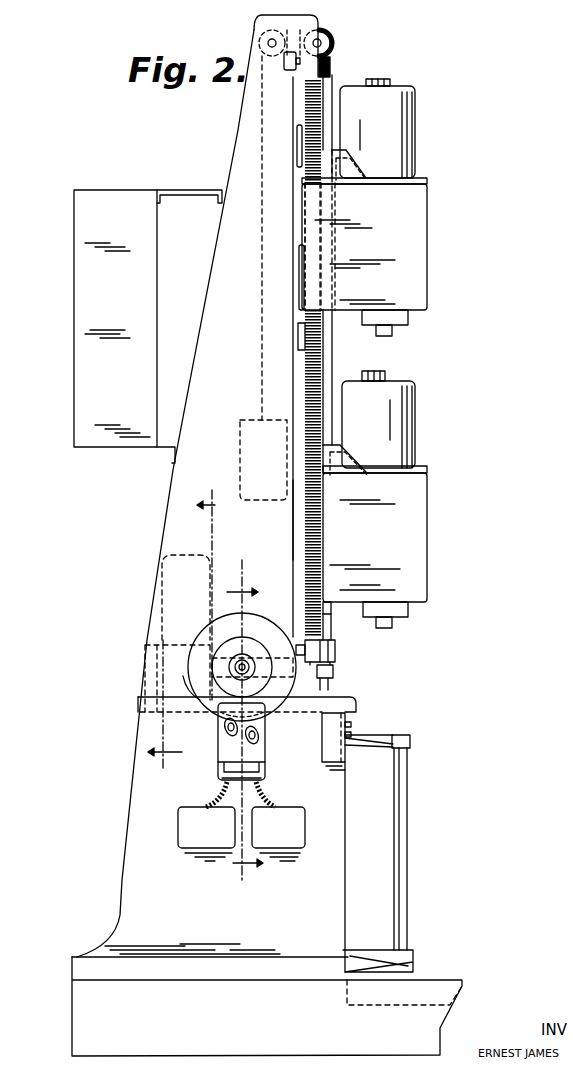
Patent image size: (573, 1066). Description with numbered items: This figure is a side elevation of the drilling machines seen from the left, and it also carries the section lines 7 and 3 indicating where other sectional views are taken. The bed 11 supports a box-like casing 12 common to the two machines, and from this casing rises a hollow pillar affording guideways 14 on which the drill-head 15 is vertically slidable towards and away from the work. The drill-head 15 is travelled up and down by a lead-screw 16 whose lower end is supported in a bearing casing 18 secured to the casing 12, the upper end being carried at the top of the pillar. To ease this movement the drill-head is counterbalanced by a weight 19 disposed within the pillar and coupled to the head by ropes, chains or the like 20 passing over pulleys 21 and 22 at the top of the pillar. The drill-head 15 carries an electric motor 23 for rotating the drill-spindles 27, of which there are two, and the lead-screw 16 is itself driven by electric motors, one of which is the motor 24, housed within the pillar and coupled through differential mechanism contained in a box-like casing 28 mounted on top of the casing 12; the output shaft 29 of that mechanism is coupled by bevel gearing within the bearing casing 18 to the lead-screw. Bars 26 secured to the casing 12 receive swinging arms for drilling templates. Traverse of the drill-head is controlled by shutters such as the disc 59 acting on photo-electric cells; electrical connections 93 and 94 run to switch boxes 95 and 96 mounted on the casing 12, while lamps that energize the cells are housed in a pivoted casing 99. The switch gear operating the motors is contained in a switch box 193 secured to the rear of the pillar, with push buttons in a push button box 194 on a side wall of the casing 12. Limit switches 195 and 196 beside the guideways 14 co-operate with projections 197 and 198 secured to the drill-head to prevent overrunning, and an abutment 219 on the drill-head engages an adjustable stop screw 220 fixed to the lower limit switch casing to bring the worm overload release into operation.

The bed 11 is at (78, 1003).
The box-like casing 12 is at (121, 870).
The guideways 14 is at (293, 522).
The drill-head 15 is at (417, 209).
The lead-screw 16 is at (320, 518).
The bearing casing 18 is at (336, 680).
The weight 19 is at (253, 437).
The ropes, chains or the like 20 is at (336, 73).
The pulley 21 is at (332, 34).
The pulley 22 is at (254, 33).
The electric motor 23 is at (415, 118).
The electric motor 24 is at (190, 572).
The bars 26 is at (405, 838).
The drill-spindle 27 is at (393, 330).
The box-like casing 28 is at (152, 688).
The output shaft 29 is at (215, 636).
The disc 59 is at (200, 668).
The electrical connection 93 is at (268, 793).
The electrical connection 94 is at (216, 793).
The switch box 95 is at (290, 835).
The switch box 96 is at (195, 838).
The casing 99 is at (258, 752).
The switch box 193 is at (86, 290).
The push button box 194 is at (332, 730).
The limit switch 195 is at (283, 62).
The limit switch 196 is at (300, 640).
The projection 197 is at (297, 141).
The projection 198 is at (297, 334).
The abutment 219 is at (329, 603).
The adjustable stop screw 220 is at (334, 668).
The section line 7 is at (188, 629).
The section line 3 is at (243, 725).